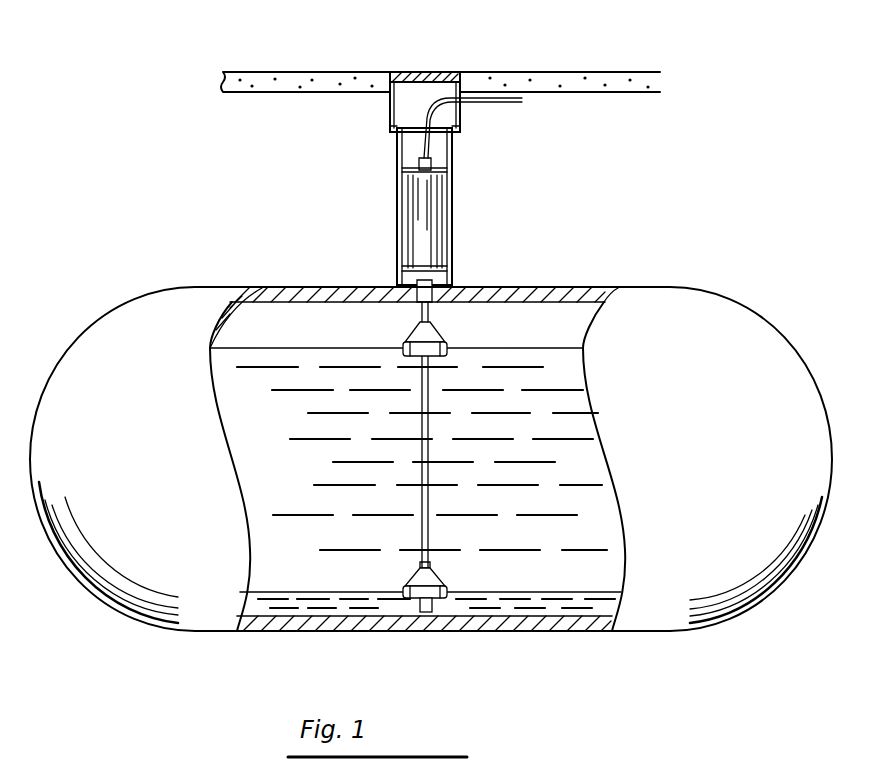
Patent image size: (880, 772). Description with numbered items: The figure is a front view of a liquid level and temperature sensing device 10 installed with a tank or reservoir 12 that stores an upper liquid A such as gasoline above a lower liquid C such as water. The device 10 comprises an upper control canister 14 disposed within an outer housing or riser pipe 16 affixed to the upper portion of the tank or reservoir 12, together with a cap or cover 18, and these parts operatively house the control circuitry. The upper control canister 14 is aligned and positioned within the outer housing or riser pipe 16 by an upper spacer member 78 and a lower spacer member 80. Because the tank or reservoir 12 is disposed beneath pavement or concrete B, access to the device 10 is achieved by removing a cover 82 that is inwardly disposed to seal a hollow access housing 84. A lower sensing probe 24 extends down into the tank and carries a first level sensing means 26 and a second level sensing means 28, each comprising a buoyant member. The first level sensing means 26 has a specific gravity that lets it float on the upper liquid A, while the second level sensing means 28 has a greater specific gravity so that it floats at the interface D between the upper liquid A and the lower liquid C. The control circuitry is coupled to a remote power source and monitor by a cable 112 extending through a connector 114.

The liquid level and temperature sensing device 10 is at (592, 210).
The tank or reservoir 12 is at (757, 318).
The upper control canister 14 is at (413, 221).
The outer housing or riser pipe 16 is at (397, 183).
The cap or cover 18 is at (410, 126).
The lower sensing probe 24 is at (442, 430).
The first level sensing means 26 is at (398, 330).
The second level sensing means 28 is at (440, 606).
The upper spacer member 78 is at (452, 172).
The lower spacer member 80 is at (452, 268).
The cover 82 is at (430, 72).
The hollow access housing 84 is at (388, 123).
The cable 112 is at (490, 106).
The connector 114 is at (432, 163).
The liquid A is at (502, 350).
The pavement or concrete B is at (300, 72).
The lower liquid C is at (560, 618).
The interface D is at (588, 592).